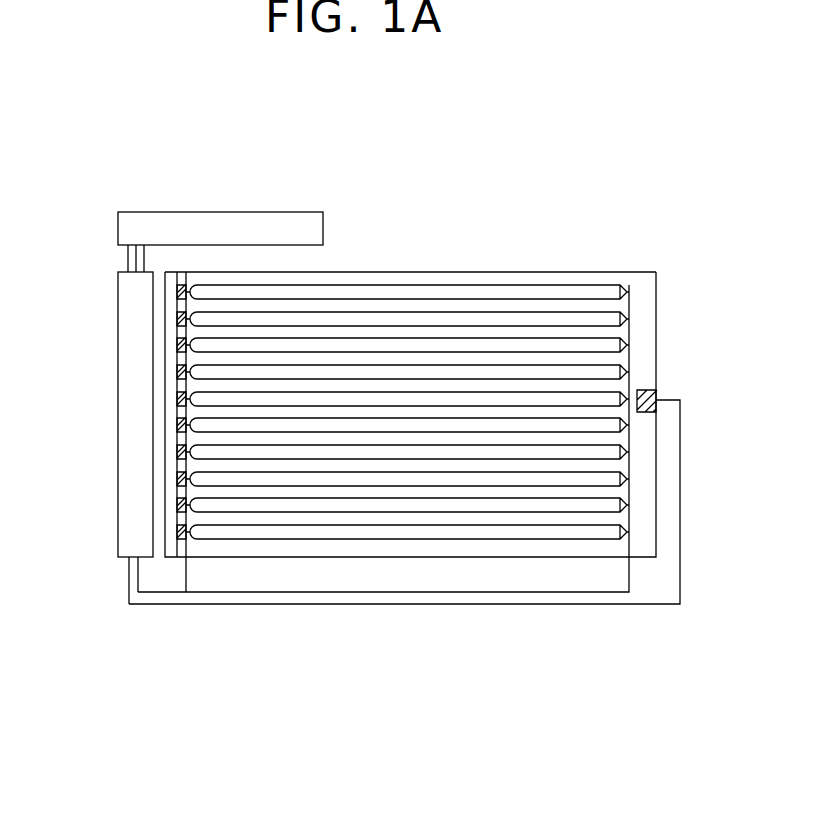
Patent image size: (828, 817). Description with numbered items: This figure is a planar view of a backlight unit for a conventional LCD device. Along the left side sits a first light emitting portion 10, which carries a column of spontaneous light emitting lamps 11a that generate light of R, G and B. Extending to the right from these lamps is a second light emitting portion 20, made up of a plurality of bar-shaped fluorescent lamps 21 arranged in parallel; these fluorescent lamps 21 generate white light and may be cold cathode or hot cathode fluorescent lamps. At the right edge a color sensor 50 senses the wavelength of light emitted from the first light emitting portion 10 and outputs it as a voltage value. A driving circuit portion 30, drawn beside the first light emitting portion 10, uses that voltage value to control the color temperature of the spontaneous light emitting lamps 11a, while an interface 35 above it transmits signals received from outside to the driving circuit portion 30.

The first light emitting portion 10 is at (171, 552).
The spontaneous light emitting lamp 11a is at (178, 289).
The second light emitting portion 20 is at (628, 615).
The fluorescent lamp 21 is at (570, 266).
The driving circuit portion 30 is at (118, 443).
The interface 35 is at (253, 212).
The color sensor 50 is at (645, 389).